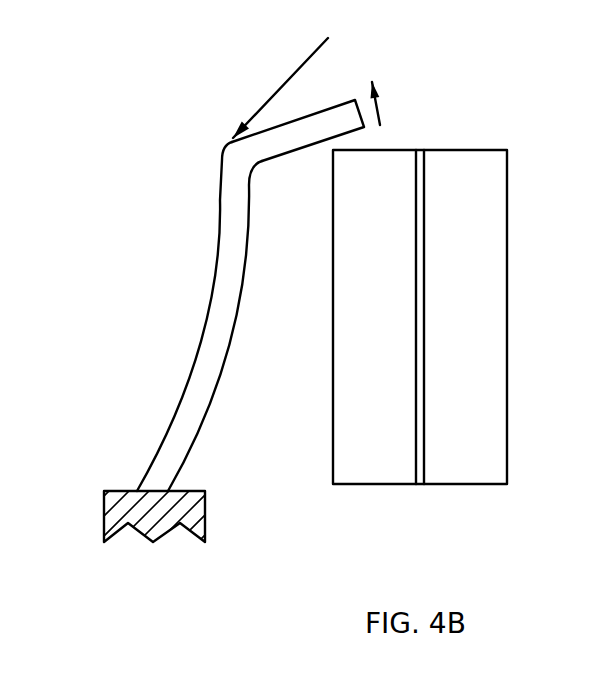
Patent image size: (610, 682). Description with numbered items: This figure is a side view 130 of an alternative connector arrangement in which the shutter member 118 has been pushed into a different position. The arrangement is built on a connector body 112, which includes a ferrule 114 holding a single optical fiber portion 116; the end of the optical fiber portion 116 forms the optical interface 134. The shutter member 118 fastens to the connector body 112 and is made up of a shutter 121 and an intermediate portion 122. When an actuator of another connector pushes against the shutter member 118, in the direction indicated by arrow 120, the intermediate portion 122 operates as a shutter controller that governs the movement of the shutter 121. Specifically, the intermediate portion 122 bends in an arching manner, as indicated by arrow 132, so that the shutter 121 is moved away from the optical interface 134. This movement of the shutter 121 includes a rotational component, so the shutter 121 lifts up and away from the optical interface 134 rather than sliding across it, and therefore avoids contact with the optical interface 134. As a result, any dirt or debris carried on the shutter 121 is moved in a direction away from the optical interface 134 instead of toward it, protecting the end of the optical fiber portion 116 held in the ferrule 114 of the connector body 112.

The connector body 112 is at (205, 520).
The ferrule 114 is at (507, 390).
The optical fiber portion 116 is at (427, 312).
The shutter member 118 is at (162, 413).
The arrow 120 is at (283, 85).
The shutter 121 is at (333, 106).
The intermediate portion 122 is at (226, 272).
The side view 130 is at (188, 128).
The arrow 132 is at (380, 112).
The optical interface 134 is at (427, 140).